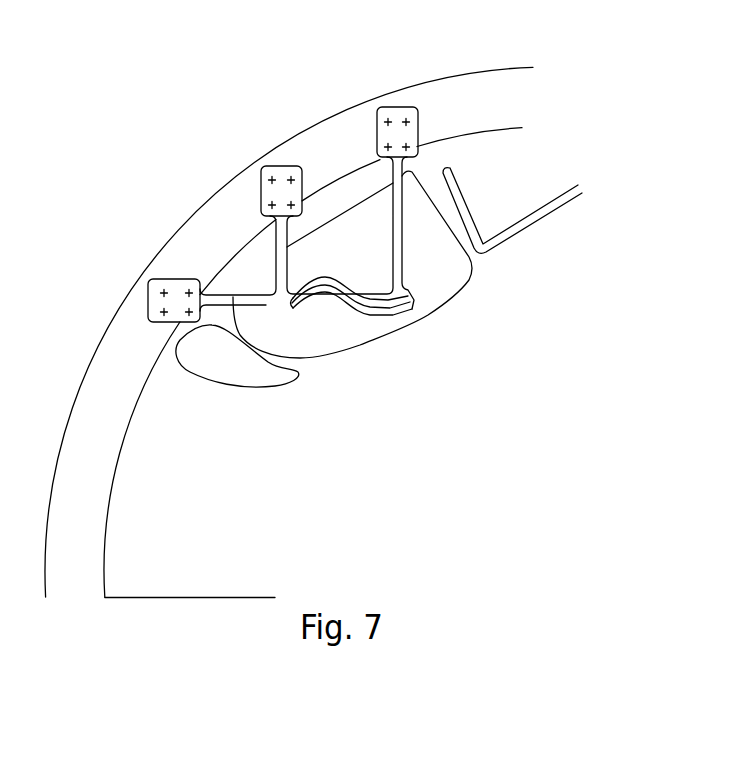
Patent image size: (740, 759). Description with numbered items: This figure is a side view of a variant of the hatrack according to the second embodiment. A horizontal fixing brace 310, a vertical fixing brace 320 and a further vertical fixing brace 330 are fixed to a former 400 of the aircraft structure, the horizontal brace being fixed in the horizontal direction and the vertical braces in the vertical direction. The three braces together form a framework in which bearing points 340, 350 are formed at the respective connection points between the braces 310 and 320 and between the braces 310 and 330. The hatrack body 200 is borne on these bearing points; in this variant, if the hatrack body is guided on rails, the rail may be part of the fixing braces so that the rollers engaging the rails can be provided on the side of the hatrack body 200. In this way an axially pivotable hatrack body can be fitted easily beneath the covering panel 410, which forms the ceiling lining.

The hatrack body 200 is at (355, 323).
The horizontal fixing brace 310 is at (233, 294).
The vertical fixing brace 320 is at (277, 238).
The further vertical fixing brace 330 is at (393, 205).
The bearing point 340 is at (266, 305).
The bearing point 350 is at (415, 305).
The former 400 is at (505, 96).
The covering panel 410 is at (556, 205).